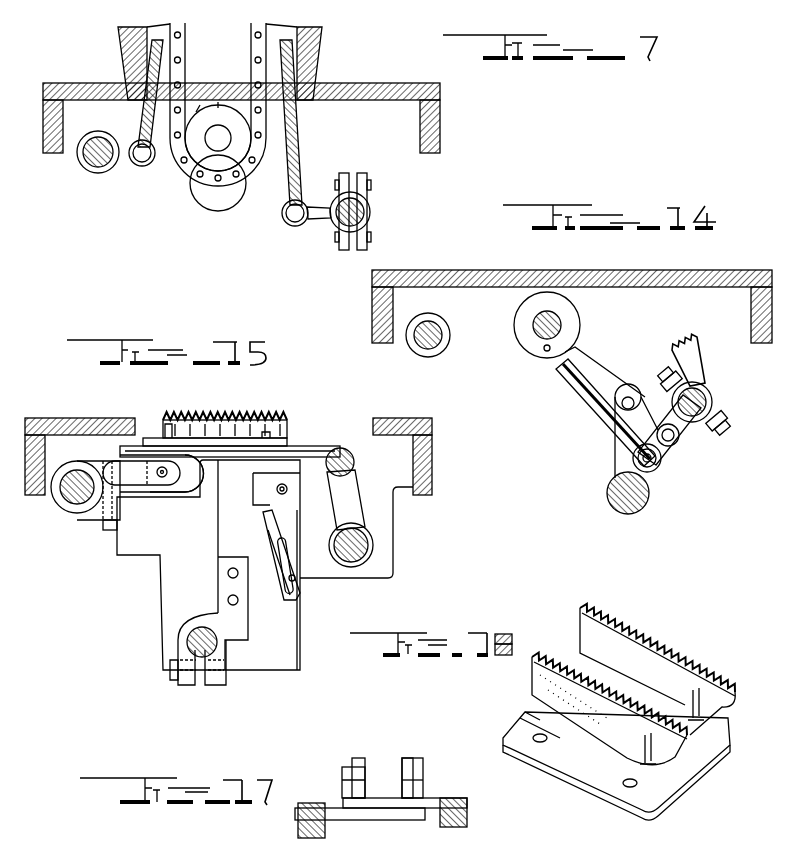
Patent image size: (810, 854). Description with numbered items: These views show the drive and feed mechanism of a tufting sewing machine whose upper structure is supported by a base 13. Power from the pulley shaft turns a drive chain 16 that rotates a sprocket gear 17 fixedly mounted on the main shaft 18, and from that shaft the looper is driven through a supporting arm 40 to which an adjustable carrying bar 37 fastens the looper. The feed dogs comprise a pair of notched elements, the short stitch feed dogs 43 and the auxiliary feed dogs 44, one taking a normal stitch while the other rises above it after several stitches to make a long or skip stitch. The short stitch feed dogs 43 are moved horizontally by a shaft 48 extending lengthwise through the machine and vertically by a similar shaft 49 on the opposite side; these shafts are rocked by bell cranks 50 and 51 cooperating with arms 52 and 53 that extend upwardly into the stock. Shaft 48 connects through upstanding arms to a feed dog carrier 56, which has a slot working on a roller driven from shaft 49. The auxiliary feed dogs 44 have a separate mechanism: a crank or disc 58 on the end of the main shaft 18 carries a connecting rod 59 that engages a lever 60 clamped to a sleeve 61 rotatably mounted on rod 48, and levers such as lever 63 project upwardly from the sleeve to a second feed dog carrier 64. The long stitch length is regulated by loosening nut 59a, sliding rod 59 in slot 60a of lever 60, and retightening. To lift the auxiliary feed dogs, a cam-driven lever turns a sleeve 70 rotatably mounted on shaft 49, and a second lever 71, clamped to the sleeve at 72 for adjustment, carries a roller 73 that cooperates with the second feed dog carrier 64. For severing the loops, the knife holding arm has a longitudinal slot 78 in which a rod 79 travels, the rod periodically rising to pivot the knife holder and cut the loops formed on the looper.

In FIG. 7, the base 13 is at (88, 83).
In FIG. 14, the base 13 is at (504, 270).
In FIG. 15, the base 13 is at (78, 416).
In FIG. 7, the drive chain 16 is at (190, 158).
In FIG. 7, the sprocket gear 17 is at (218, 104).
In FIG. 7, the main shaft 18 is at (236, 148).
In FIG. 14, the main shaft 18 is at (562, 325).
In FIG. 15, the main shaft 18 is at (198, 636).
In FIG. 15, the carrying bar 37 is at (226, 516).
In FIG. 15, the supporting arm 40 is at (220, 574).
In FIG. 15, the short stitch feed dogs 43 is at (251, 412).
In FIG. 18, the short stitch feed dogs 43 is at (688, 669).
In FIG. 17, the short stitch feed dogs 43 is at (360, 764).
In FIG. 15, the auxiliary feed dogs 44 is at (160, 438).
In FIG. 17, the auxiliary feed dogs 44 is at (414, 762).
In FIG. 7, the shaft 48 is at (368, 208).
In FIG. 14, the shaft 48 is at (704, 383).
In FIG. 15, the shaft 48 is at (374, 545).
In FIG. 7, the shaft 49 is at (88, 166).
In FIG. 14, the shaft 49 is at (412, 353).
In FIG. 15, the shaft 49 is at (60, 498).
In FIG. 7, the bell crank 50 is at (140, 165).
In FIG. 7, the bell crank 51 is at (322, 209).
In FIG. 7, the arm 52 is at (146, 120).
In FIG. 7, the arm 53 is at (296, 118).
In FIG. 17, the feed dog carrier 56 is at (298, 832).
In FIG. 14, the crank or disc 58 is at (524, 336).
In FIG. 14, the connecting rod 59 is at (586, 398).
In FIG. 14, the nut 59a is at (657, 471).
In FIG. 14, the lever 60 is at (661, 462).
In FIG. 14, the slot 60a is at (680, 440).
In FIG. 14, the sleeve 61 is at (710, 396).
In FIG. 15, the lever 63 is at (356, 491).
In FIG. 15, the feed dog carrier 64 is at (320, 447).
In FIG. 17, the feed dog carrier 64 is at (468, 826).
In FIG. 15, the sleeve 70 is at (70, 520).
In FIG. 15, the lever 71 is at (106, 462).
In FIG. 15, the clamp 72 is at (117, 527).
In FIG. 15, the roller 73 is at (141, 495).
In FIG. 15, the longitudinal slot 78 is at (284, 590).
In FIG. 15, the rod 79 is at (300, 582).